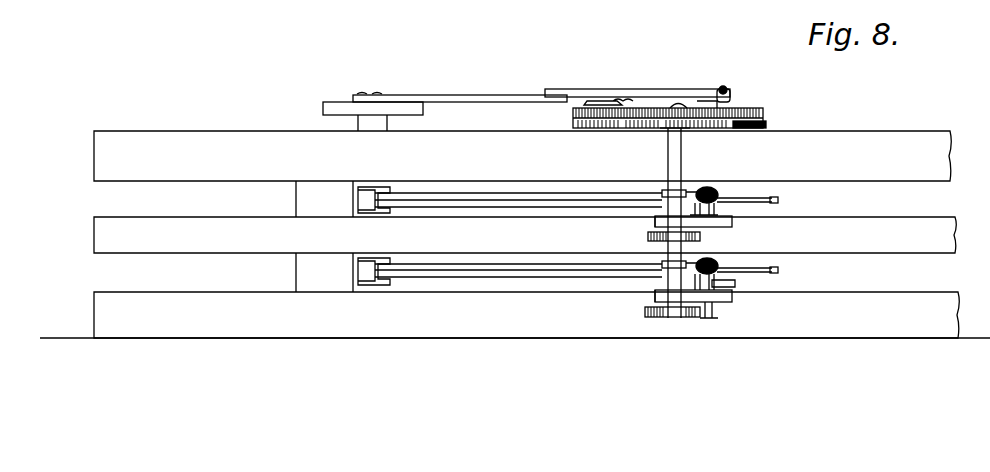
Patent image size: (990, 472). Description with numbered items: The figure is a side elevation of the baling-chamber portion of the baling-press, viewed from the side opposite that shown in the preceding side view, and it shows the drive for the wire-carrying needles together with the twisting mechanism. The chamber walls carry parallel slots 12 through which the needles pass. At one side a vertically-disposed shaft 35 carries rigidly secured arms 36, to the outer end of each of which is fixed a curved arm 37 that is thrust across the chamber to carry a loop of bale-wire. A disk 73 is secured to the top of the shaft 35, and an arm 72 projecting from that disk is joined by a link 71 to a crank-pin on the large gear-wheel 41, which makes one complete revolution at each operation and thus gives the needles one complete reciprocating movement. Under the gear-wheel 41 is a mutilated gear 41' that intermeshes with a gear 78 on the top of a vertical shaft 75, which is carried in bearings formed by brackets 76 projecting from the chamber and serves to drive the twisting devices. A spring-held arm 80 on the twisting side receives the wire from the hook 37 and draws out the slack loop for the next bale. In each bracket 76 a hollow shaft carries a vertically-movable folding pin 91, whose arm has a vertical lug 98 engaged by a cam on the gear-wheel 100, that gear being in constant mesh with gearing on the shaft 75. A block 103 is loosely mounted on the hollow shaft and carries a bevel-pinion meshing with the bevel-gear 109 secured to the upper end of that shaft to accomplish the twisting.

The slots 12 is at (893, 205).
The disk 73 is at (338, 102).
The arm 72 is at (436, 95).
The link 71 is at (598, 89).
The gear-wheel 41 is at (689, 111).
The mutilated gear 41' is at (671, 138).
The gear 78 is at (662, 131).
The vertical shaft 75 is at (683, 163).
The arm 80 is at (716, 192).
The curved arm 37 is at (772, 200).
The bevel-gear 109 is at (735, 268).
The block 103 is at (735, 284).
The pin 91 is at (733, 219).
The brackets 76 is at (658, 223).
The vertical lug 98 is at (660, 241).
The gear-wheel 100 is at (702, 232).
The shaft 35 is at (366, 214).
The arms 36 is at (428, 272).